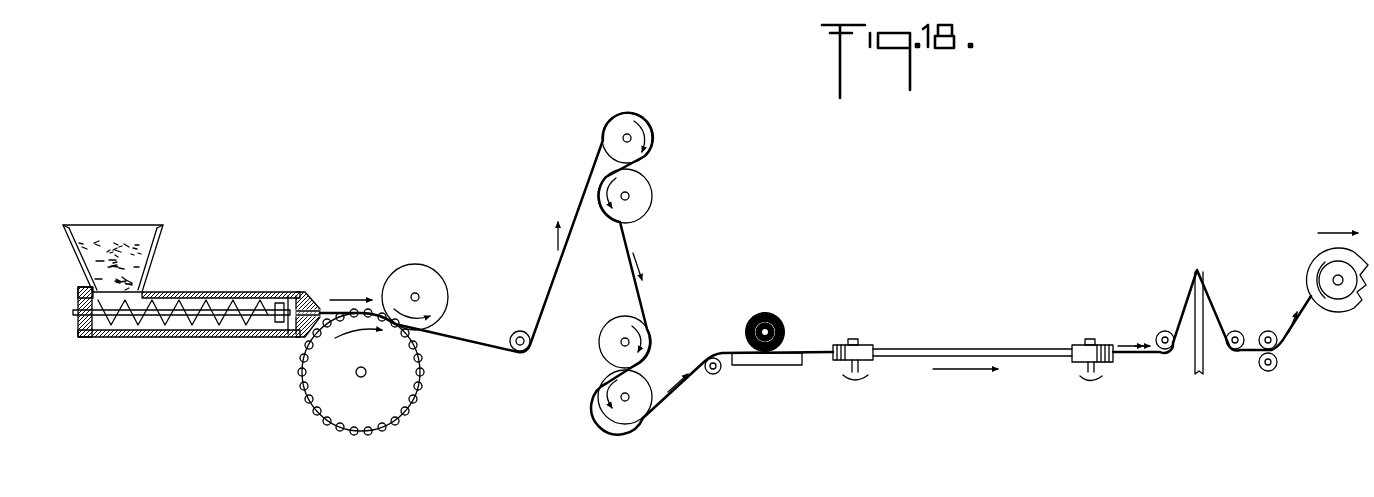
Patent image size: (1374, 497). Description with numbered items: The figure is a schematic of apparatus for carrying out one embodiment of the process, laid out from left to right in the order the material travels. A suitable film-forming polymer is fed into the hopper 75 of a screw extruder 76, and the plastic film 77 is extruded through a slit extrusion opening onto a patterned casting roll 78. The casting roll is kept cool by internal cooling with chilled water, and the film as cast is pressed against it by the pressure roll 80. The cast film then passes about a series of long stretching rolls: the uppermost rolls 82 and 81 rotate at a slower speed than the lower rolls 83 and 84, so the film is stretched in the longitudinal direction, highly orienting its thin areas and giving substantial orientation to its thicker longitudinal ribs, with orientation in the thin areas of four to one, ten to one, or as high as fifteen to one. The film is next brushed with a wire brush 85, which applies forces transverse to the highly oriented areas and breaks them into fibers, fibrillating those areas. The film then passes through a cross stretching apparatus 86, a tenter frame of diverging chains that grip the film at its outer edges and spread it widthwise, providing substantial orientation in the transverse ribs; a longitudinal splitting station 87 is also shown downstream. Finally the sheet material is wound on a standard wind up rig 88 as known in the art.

The hopper 75 is at (163, 232).
The screw extruder 76 is at (195, 292).
The plastic film 77 is at (322, 312).
The patterned casting roll 78 is at (372, 406).
The pressure roll 80 is at (413, 270).
The long stretching roll 81 is at (633, 122).
The long stretching roll 82 is at (640, 196).
The long stretching roll 83 is at (630, 325).
The long stretching roll 84 is at (652, 382).
The wire brush 85 is at (768, 318).
The cross stretching apparatus 86 is at (935, 346).
The longitudinal splitting blade 87 is at (1200, 300).
The wind up rig 88 is at (1353, 316).